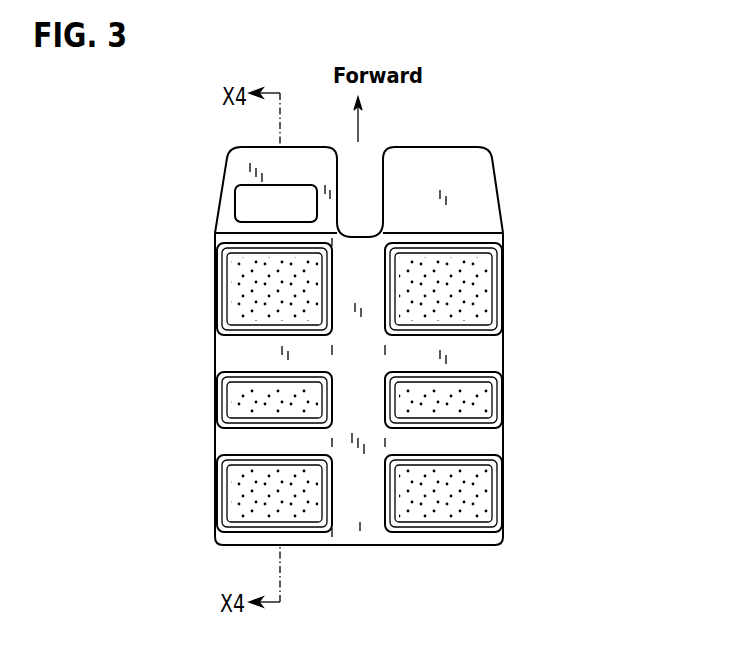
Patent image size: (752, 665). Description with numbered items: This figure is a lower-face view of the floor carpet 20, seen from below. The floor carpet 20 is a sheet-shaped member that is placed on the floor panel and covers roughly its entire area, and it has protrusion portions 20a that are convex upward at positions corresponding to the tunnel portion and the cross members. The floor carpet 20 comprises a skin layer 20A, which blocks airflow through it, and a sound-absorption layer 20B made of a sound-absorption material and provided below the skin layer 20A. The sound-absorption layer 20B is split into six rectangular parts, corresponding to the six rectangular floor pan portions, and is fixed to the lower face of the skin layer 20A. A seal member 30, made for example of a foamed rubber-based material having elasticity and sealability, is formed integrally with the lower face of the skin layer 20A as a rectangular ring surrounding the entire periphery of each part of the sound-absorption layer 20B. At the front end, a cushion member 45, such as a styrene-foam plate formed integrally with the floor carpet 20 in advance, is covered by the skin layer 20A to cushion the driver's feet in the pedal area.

The floor carpet 20 is at (568, 245).
The skin layer 20A is at (483, 170).
The sound-absorption layer 20B is at (245, 287).
The protrusion portions 20a is at (222, 238).
The seal member 30 is at (216, 313).
The cushion member 45 is at (247, 197).